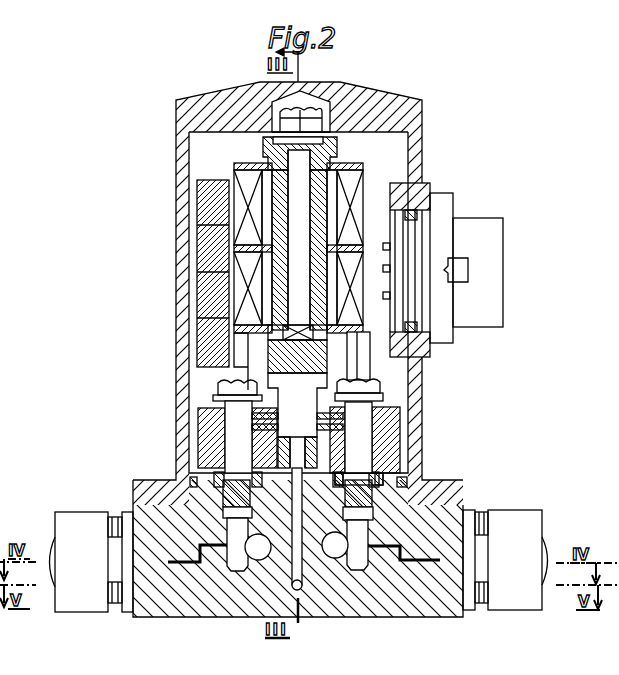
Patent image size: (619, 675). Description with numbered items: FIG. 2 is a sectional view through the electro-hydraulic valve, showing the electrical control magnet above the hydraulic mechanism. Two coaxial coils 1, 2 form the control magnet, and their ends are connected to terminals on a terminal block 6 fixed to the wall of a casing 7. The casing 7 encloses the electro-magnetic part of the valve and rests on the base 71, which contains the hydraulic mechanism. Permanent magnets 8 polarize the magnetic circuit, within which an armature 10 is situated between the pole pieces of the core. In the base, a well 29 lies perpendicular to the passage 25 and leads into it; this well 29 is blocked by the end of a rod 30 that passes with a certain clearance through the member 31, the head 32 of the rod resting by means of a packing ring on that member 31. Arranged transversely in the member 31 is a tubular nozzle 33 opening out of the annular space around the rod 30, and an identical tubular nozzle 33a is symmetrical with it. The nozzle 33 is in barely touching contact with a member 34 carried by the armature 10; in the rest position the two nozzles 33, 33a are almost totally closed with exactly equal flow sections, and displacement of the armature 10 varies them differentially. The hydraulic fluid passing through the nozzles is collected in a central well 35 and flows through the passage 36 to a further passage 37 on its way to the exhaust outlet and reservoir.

The coil 1 is at (255, 205).
The coil 2 is at (247, 311).
The terminal block 6 is at (478, 233).
The casing 7 is at (373, 100).
The base 71 is at (160, 514).
The permanent magnets 8 is at (205, 330).
The armature 10 is at (305, 355).
The passage 25 is at (340, 556).
The well 29 is at (370, 528).
The rod 30 is at (358, 430).
The member 31 is at (388, 452).
The head 32 is at (388, 403).
The tubular nozzle 33 is at (392, 414).
The tubular nozzle 33a is at (277, 426).
The member 34 is at (297, 420).
The central well 35 is at (265, 443).
The passage 36 is at (293, 548).
The passage 37 is at (302, 590).